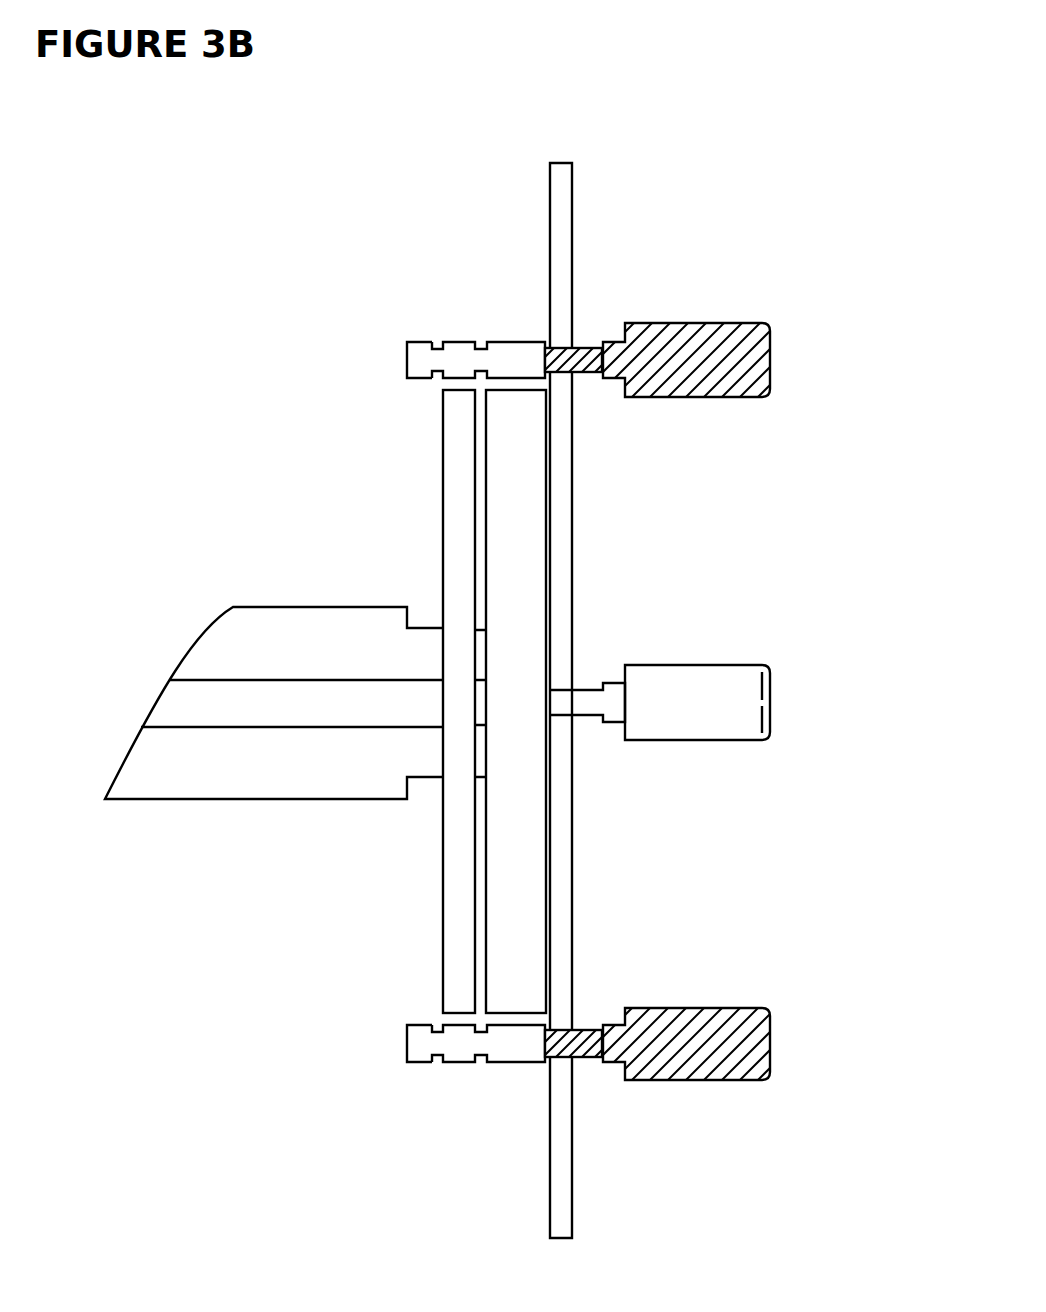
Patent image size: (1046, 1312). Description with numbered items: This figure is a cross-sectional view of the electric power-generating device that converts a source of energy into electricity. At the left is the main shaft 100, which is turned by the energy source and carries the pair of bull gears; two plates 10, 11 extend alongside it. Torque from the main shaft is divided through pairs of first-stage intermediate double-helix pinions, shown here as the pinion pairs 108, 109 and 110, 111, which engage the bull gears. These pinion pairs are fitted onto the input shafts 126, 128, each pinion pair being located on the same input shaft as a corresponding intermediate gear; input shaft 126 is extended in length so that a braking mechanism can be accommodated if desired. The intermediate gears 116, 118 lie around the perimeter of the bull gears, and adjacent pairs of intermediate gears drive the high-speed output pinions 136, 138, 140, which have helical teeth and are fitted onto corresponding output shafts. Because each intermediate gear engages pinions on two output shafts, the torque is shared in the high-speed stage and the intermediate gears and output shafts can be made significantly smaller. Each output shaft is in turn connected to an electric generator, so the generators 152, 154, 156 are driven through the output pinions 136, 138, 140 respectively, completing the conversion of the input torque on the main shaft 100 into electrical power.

The main shaft 100 is at (141, 762).
The first plate 10 is at (447, 830).
The second plate 11 is at (490, 905).
The first-stage intermediate double-helix pinion 108 is at (455, 345).
The first-stage intermediate double-helix pinion 109 is at (508, 347).
The first-stage intermediate double-helix pinion 110 is at (453, 1062).
The first-stage intermediate double-helix pinion 111 is at (513, 1062).
The intermediate gear 116 is at (563, 195).
The intermediate gear 118 is at (565, 1152).
The input shaft 126 is at (407, 360).
The input shaft 128 is at (407, 1042).
The high-speed output pinion 136 is at (556, 346).
The high-speed output pinion 138 is at (567, 693).
The high-speed output pinion 140 is at (570, 1028).
The generator 152 is at (732, 322).
The generator 154 is at (735, 665).
The generator 156 is at (717, 1007).